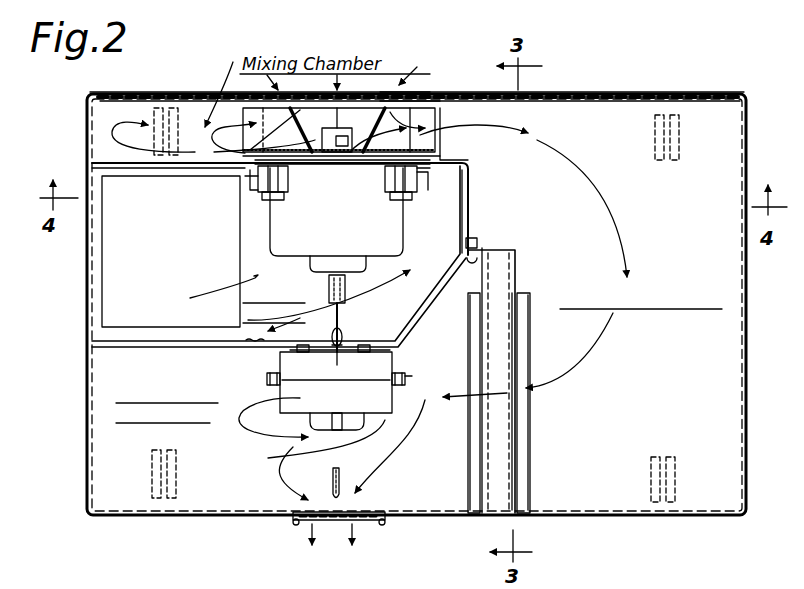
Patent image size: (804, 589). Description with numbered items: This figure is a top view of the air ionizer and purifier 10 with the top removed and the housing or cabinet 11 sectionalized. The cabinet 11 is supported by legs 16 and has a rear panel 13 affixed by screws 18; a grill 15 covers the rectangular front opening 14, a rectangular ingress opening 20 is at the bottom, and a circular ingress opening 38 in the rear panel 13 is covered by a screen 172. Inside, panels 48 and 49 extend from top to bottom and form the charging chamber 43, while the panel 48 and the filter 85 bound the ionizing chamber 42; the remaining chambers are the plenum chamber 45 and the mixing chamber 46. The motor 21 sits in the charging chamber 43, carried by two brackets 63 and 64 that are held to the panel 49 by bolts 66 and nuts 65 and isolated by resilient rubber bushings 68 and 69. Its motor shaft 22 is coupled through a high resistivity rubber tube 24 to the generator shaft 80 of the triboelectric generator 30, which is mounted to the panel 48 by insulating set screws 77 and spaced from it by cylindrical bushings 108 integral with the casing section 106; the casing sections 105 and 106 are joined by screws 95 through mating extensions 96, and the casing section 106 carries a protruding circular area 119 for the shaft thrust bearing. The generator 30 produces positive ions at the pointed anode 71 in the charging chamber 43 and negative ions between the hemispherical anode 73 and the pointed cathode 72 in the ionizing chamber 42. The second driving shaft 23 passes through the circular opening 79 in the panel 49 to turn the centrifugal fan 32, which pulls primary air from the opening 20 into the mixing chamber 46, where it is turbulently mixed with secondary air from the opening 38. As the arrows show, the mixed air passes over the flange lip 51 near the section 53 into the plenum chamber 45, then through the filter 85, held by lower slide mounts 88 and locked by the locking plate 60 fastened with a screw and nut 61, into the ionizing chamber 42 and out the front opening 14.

The air ionizer and purifier 10 is at (346, 287).
The housing or cabinet 11 is at (89, 296).
The rear panel 13 is at (142, 94).
The opening 14 is at (354, 515).
The grill 15 is at (308, 522).
The legs 16 is at (152, 113).
The screws 18 is at (99, 92).
The ingress opening 20 is at (180, 251).
The motor 21 is at (403, 226).
The motor shaft 22 is at (347, 299).
The second driving shaft 23 is at (346, 140).
The rubber tube 24 is at (346, 321).
The triboelectric generator 30 is at (276, 402).
The centrifugal fan 32 is at (263, 146).
The circular ingress opening 38 is at (418, 96).
The ionizing chamber 42 is at (167, 414).
The charging chamber 43 is at (281, 313).
The plenum chamber 45 is at (624, 338).
The mixing chamber 46 is at (196, 112).
The panel 48 is at (240, 342).
The panel 49 is at (240, 168).
The flange lip 51 is at (468, 162).
The section 53 is at (468, 216).
The locking plate 60 is at (500, 250).
The screw and nut 61 is at (477, 240).
The bracket 63 is at (258, 190).
The bracket 64 is at (424, 190).
The nuts 65 is at (274, 200).
The bolts 66 is at (306, 150).
The resilient rubber bushings 68 is at (256, 176).
The resilient rubber bushings 69 is at (418, 176).
The anode 71 is at (339, 353).
The pointed cathode 72 is at (332, 472).
The anode 73 is at (317, 441).
The set screws 77 is at (376, 352).
The circular opening 79 is at (342, 148).
The generator shaft 80 is at (345, 336).
The filter 85 is at (498, 455).
The lower slide mounts 88 is at (470, 477).
The screws 95 is at (435, 364).
The ears or extensions 96 is at (267, 379).
The casing section 105 is at (374, 398).
The casing section 106 is at (374, 363).
The cylindrical bushings 108 is at (310, 353).
The protruding circular area 119 is at (310, 421).
The screen 172 is at (403, 93).